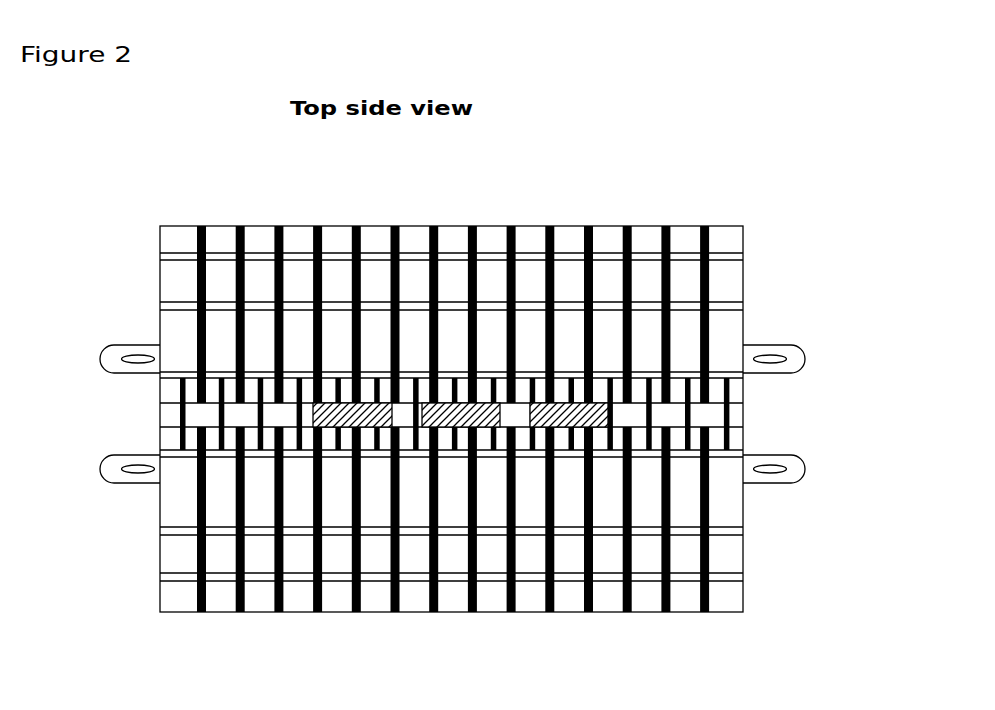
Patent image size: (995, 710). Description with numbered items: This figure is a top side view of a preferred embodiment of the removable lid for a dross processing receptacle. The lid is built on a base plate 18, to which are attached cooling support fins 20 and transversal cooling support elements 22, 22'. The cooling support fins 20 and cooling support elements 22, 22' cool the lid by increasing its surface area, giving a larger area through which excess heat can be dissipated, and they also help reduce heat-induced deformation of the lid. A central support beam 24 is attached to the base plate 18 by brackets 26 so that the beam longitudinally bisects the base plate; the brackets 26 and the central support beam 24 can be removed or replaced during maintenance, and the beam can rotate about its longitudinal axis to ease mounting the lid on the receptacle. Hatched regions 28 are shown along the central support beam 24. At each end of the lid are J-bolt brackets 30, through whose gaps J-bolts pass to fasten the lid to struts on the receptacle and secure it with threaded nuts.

The cooling support fins 20 is at (712, 214).
The transversal cooling support element 22 is at (517, 384).
The transversal cooling support element 22' is at (501, 254).
The brackets 26 is at (739, 372).
The central support beam 24 is at (718, 412).
The insulating separator (hatched) 28 is at (573, 407).
The base plate 18 is at (734, 491).
The J-bolt brackets 30 is at (780, 489).